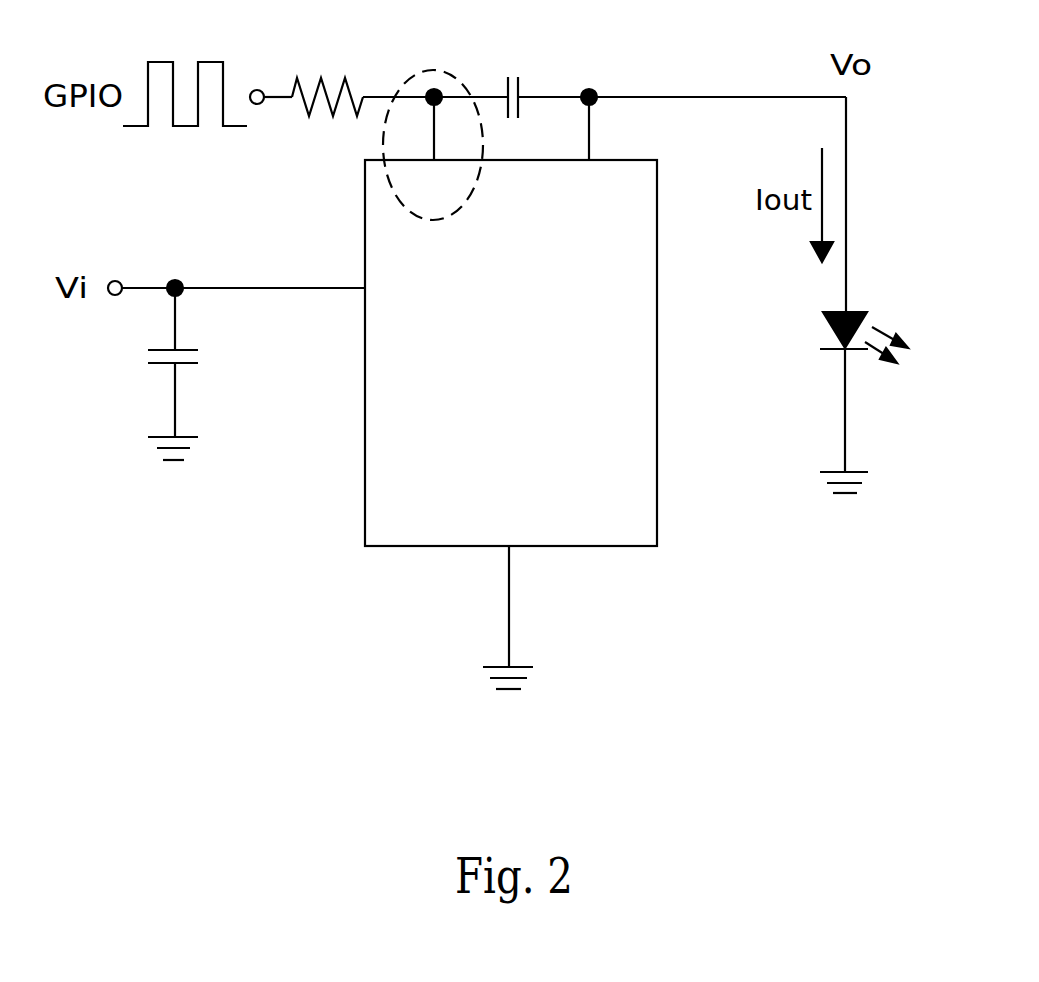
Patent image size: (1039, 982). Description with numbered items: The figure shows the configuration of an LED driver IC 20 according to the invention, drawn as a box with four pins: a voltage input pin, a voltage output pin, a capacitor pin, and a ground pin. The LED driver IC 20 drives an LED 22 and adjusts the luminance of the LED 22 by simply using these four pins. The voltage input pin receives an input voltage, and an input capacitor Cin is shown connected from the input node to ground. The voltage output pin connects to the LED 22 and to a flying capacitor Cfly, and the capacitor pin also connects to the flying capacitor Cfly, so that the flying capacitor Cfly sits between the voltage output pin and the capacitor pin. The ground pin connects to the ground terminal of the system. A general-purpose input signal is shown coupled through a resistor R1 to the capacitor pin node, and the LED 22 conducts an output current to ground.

The LED driver IC 20 is at (657, 473).
The LED 22 is at (848, 312).
The resistor R1 is at (327, 76).
The flying capacitor Cfly is at (516, 77).
The input capacitor Cin is at (200, 358).